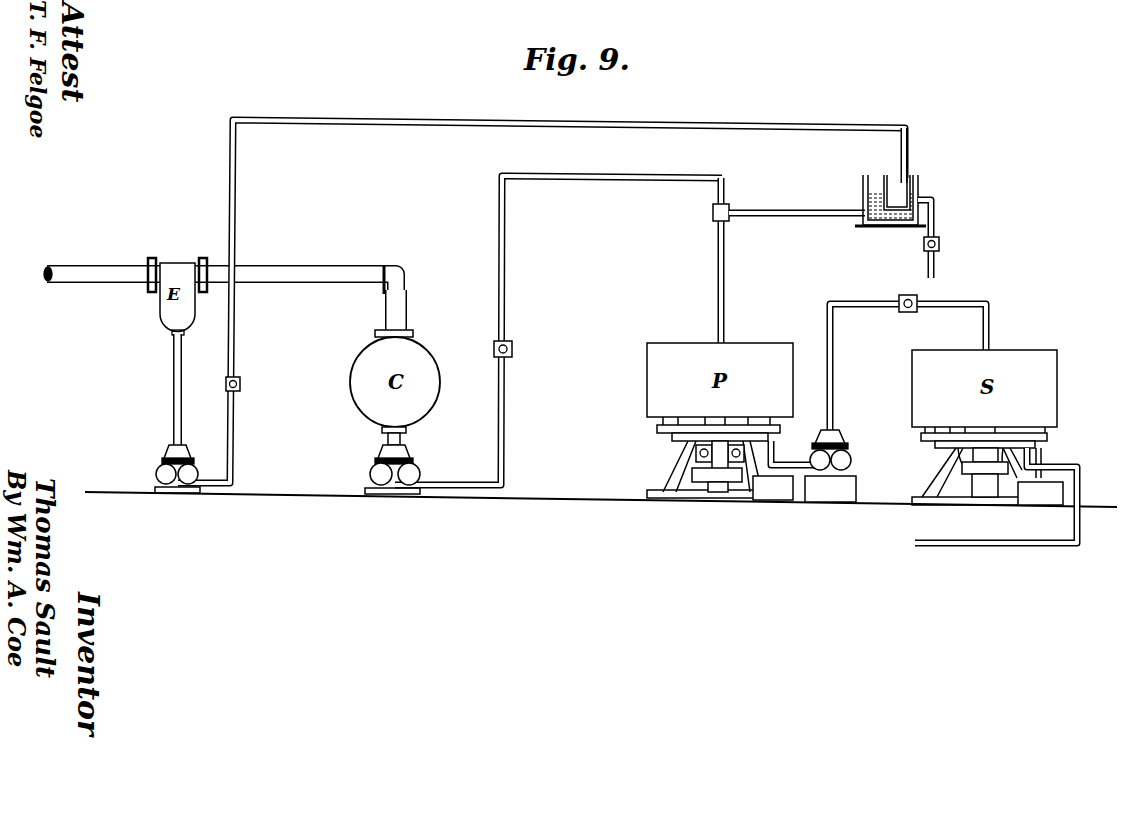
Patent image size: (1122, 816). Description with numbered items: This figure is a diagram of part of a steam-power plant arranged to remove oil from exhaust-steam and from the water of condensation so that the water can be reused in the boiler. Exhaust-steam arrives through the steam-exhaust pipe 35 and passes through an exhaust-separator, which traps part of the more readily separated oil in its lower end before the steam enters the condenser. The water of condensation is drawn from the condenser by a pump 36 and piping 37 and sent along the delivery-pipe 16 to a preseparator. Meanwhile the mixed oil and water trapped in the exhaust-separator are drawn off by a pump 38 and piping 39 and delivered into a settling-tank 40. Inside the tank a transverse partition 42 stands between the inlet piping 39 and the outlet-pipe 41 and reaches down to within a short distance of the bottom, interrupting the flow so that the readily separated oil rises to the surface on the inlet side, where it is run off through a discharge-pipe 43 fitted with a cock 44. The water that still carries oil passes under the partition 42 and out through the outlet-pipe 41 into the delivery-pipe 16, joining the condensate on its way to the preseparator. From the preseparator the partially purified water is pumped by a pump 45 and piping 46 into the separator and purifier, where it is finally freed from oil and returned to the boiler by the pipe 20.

The steam-exhaust pipe 35 is at (124, 276).
The piping 39 is at (235, 342).
The pump 38 is at (165, 466).
The pump 36 is at (409, 470).
The piping 37 is at (507, 331).
The pipe to press 16 is at (729, 262).
The outlet-pipe 41 is at (826, 213).
The settling-tank 40 is at (921, 190).
The transverse partition 42 is at (889, 178).
The discharge-pipe 43 is at (935, 236).
The cock 44 is at (940, 244).
The piping 46 is at (802, 470).
The pump 45 is at (839, 459).
The pipe 20 is at (1046, 546).